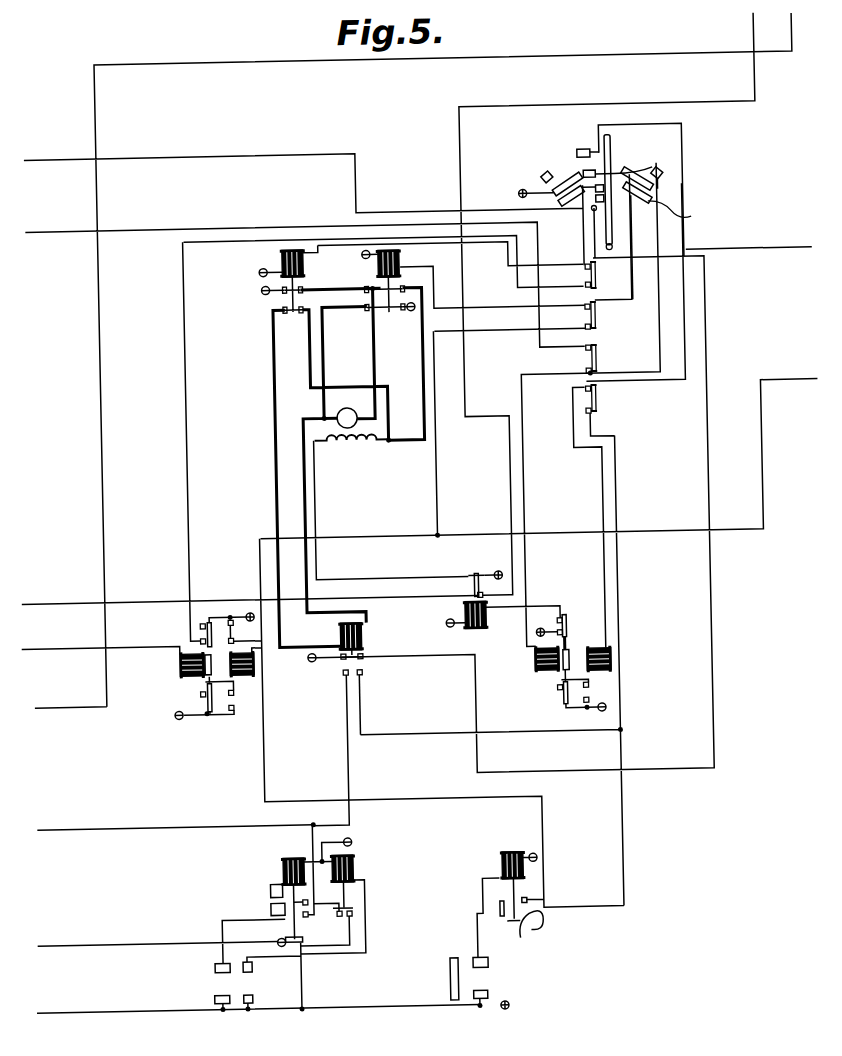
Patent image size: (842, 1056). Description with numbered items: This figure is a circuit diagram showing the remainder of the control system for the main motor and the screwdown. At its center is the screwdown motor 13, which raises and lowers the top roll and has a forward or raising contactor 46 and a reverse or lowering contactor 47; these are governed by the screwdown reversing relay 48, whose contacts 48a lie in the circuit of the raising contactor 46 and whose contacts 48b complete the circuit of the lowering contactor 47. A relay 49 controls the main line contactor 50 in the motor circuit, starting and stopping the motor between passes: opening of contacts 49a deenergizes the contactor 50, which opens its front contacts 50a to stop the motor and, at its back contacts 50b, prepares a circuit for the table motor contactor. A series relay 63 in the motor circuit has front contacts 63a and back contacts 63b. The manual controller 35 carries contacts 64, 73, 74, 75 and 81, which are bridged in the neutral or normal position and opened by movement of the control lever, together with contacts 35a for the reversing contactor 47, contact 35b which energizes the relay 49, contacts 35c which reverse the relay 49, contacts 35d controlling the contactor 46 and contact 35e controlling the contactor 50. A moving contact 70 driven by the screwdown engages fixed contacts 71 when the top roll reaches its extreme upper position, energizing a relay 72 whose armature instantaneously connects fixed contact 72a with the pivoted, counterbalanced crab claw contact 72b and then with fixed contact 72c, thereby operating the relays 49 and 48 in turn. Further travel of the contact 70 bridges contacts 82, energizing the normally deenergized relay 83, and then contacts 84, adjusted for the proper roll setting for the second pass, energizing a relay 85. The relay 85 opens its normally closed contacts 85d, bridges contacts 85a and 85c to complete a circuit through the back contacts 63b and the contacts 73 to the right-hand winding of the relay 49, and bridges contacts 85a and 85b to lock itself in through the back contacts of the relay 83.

The screwdown motor 13 is at (343, 448).
The manual controller 35 is at (657, 190).
The contacts 35a is at (674, 239).
The contact 35b is at (660, 182).
The contacts 35c is at (582, 159).
The contacts 35d is at (553, 186).
The contact 35e is at (540, 186).
The forward contactor 46 is at (278, 262).
The reverse contactor 47 is at (396, 262).
The screwdown reversing relay 48 is at (192, 686).
The contacts 48a is at (189, 643).
The contacts 48b is at (220, 623).
The relay 49 is at (548, 679).
The contacts 49a is at (551, 624).
The main line contactor 50 is at (452, 620).
The front contacts 50a is at (466, 581).
The back contacts 50b is at (466, 600).
The series relay 63 is at (356, 643).
The contacts 63a is at (337, 677).
The back contacts 63b is at (349, 680).
The contacts 64 is at (586, 214).
The moving contact 70 is at (432, 985).
The fixed contacts 71 is at (470, 982).
The relay 72 is at (486, 876).
The fixed contact 72a is at (482, 916).
The crab claw contact 72b is at (522, 917).
The fixed contact 72c is at (509, 906).
The contacts 73 is at (579, 399).
The contacts 74 is at (581, 280).
The contacts 75 is at (580, 330).
The contacts 81 is at (580, 360).
The contacts 82 is at (232, 976).
The relay 83 is at (337, 870).
The contacts 84 is at (203, 976).
The relay 85 is at (267, 872).
The contacts 85a is at (254, 914).
The contacts 85b is at (254, 893).
The contacts 85c is at (291, 919).
The contacts 85d is at (268, 943).